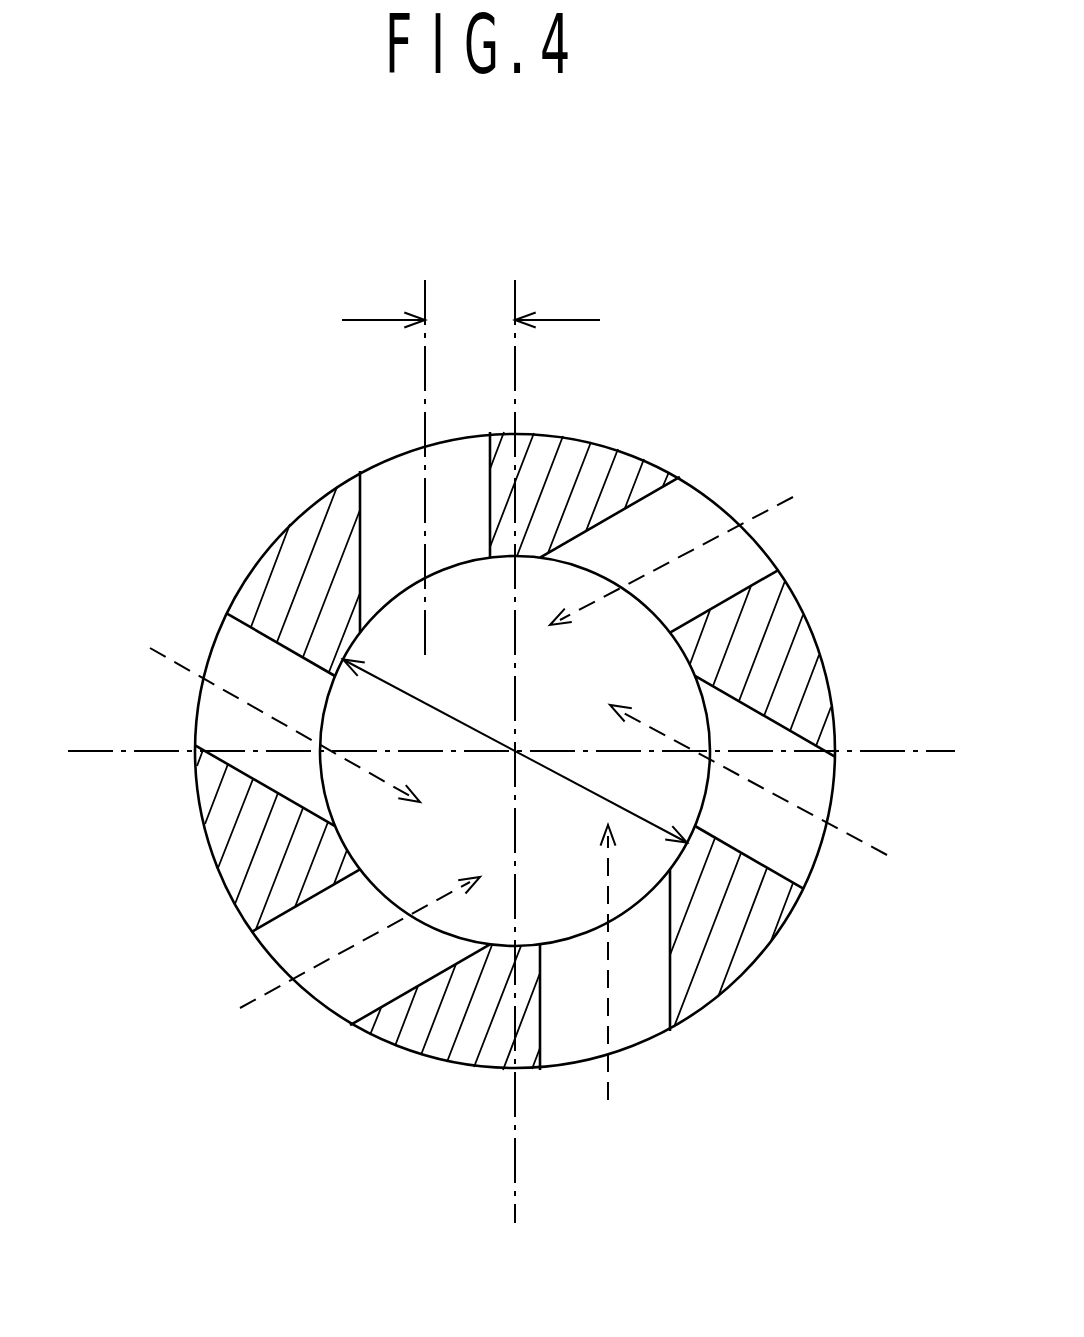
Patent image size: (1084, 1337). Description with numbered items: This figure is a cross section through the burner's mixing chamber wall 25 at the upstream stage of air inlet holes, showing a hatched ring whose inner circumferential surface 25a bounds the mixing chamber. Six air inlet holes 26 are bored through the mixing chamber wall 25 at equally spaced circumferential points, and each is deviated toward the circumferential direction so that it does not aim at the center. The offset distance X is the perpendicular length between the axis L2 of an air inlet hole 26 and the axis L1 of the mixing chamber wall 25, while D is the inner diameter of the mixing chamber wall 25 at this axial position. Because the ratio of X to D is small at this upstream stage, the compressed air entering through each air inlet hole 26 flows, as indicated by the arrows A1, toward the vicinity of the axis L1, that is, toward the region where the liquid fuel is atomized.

The mixing chamber wall 25 is at (212, 860).
The inner circumferential surface 25a is at (500, 943).
The air inlet holes 26 is at (388, 492).
The arrow A1 is at (512, 810).
The inner diameter D is at (515, 751).
The offset distance X is at (471, 292).
The axis L1 is at (514, 755).
The axis L2 is at (425, 367).